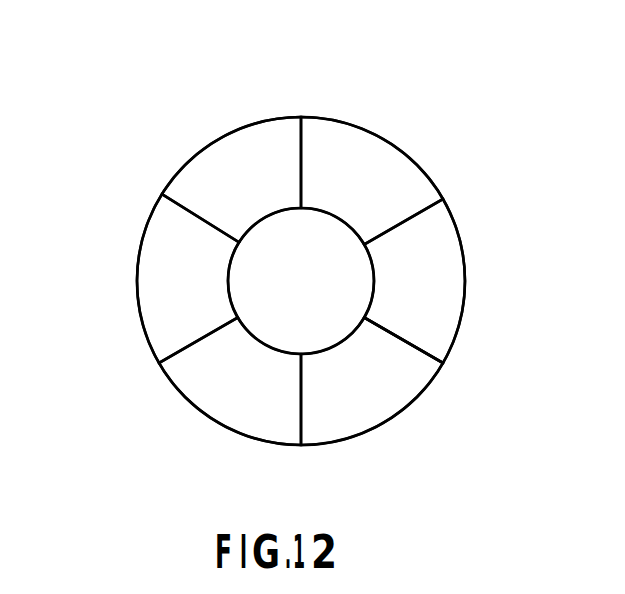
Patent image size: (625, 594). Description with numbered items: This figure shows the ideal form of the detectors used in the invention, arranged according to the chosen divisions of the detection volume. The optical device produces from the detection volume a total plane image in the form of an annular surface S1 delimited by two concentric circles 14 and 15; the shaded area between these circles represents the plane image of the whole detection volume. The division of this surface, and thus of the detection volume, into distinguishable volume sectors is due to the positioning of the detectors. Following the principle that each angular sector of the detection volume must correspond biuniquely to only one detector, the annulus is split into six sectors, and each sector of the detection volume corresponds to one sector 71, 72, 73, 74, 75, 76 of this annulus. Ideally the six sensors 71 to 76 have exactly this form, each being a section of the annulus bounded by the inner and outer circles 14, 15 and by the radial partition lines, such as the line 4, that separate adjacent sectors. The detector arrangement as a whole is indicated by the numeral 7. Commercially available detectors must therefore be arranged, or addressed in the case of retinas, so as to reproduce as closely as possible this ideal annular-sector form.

The partition wall 4 is at (440, 370).
The rotor / sector wheel 7 is at (296, 280).
The circle 14 is at (358, 123).
The circle 15 is at (371, 304).
The sensor 71 is at (443, 284).
The sensor 72 is at (390, 170).
The sensor 73 is at (232, 152).
The sensor 74 is at (160, 267).
The sensor 75 is at (207, 397).
The sensor 76 is at (368, 404).
The annular surface S1 is at (188, 244).